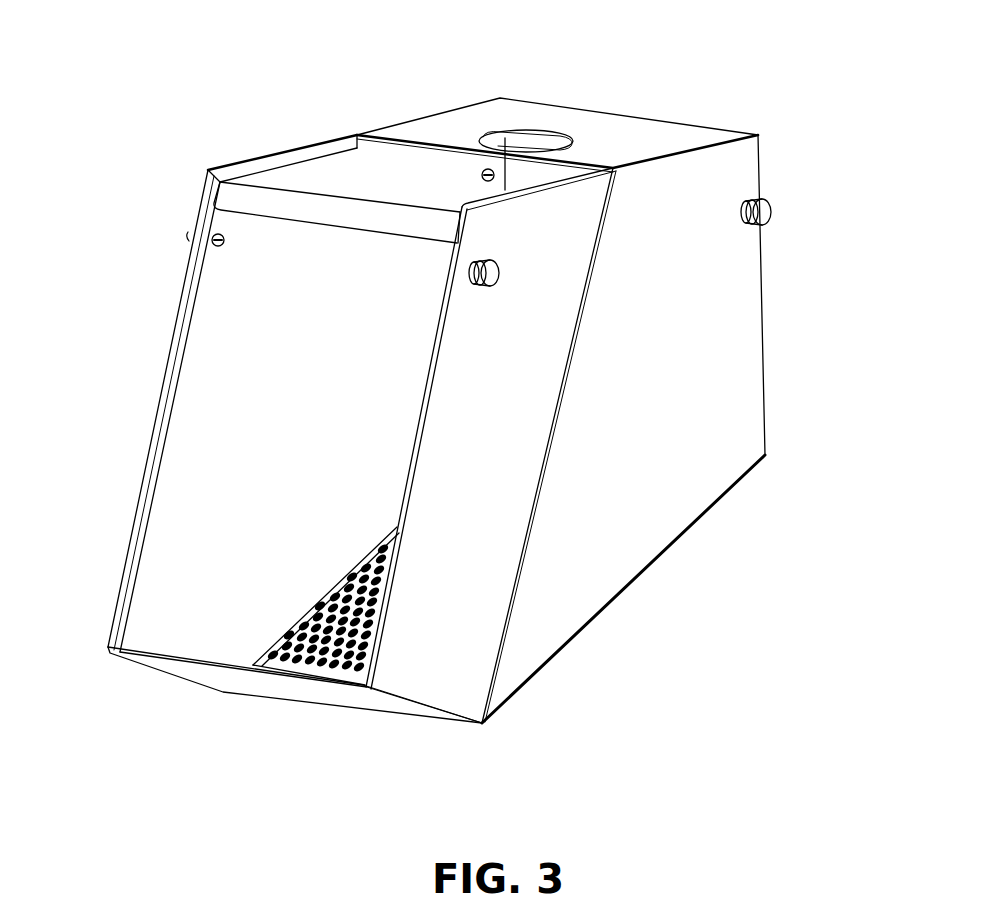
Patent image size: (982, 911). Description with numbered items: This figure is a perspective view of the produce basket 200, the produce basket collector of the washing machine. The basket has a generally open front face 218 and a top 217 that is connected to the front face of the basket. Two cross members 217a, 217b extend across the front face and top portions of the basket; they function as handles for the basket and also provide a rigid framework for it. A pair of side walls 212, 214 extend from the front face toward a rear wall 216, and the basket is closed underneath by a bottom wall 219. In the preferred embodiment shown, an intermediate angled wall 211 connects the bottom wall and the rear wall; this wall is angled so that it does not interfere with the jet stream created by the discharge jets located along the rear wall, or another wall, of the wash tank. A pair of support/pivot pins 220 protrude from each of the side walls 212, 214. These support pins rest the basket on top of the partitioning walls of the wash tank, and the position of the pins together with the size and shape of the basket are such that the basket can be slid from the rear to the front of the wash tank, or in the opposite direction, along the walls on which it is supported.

The produce basket 200 is at (288, 84).
The intermediate angled wall 211 is at (693, 527).
The side wall 212 is at (212, 433).
The side wall 214 is at (557, 542).
The rear wall 216 is at (776, 350).
The top 217 is at (399, 152).
The cross member 217a is at (243, 205).
The cross member 217b is at (477, 118).
The front face 218 is at (200, 546).
The bottom wall 219 is at (345, 695).
The support/pivot pins 220 is at (208, 253).